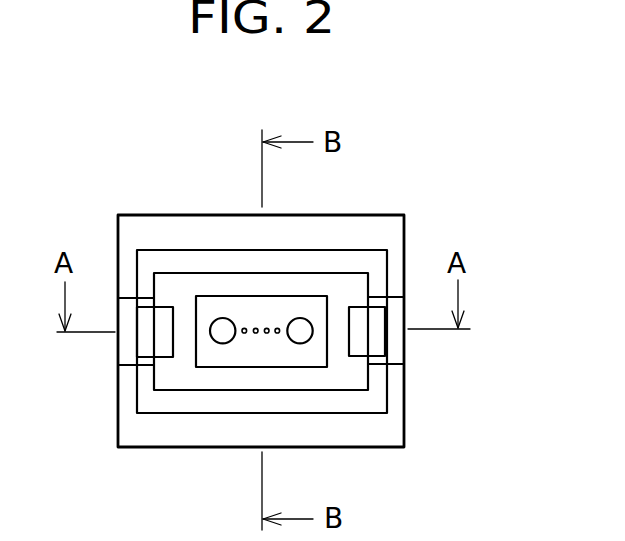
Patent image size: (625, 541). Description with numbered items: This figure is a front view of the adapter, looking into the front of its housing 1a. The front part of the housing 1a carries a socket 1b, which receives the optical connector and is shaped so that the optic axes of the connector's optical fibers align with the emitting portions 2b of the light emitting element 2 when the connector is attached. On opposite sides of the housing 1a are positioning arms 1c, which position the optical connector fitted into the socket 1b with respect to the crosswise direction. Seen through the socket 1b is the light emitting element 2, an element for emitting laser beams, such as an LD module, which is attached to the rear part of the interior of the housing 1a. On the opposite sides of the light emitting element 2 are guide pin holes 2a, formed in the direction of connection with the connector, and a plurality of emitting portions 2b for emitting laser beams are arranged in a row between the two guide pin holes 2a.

The housing 1a is at (157, 227).
The socket 1b is at (314, 282).
The positioning arms 1c is at (145, 337).
The light emitting element 2 is at (227, 290).
The guide pin holes 2a is at (225, 339).
The emitting portions 2b is at (277, 334).